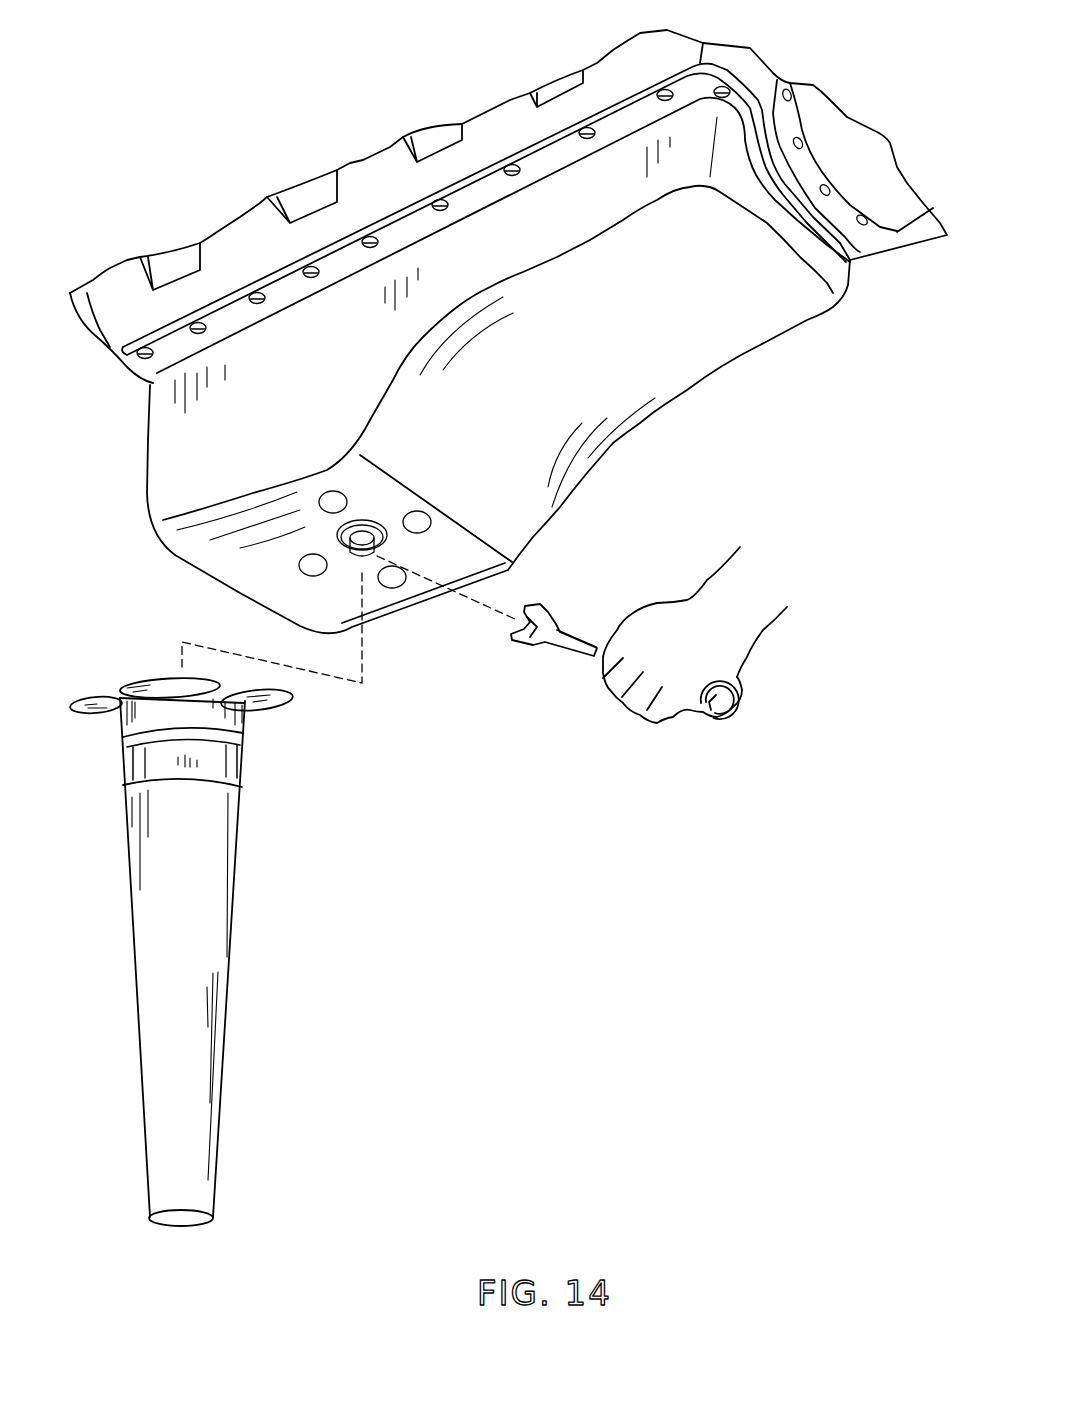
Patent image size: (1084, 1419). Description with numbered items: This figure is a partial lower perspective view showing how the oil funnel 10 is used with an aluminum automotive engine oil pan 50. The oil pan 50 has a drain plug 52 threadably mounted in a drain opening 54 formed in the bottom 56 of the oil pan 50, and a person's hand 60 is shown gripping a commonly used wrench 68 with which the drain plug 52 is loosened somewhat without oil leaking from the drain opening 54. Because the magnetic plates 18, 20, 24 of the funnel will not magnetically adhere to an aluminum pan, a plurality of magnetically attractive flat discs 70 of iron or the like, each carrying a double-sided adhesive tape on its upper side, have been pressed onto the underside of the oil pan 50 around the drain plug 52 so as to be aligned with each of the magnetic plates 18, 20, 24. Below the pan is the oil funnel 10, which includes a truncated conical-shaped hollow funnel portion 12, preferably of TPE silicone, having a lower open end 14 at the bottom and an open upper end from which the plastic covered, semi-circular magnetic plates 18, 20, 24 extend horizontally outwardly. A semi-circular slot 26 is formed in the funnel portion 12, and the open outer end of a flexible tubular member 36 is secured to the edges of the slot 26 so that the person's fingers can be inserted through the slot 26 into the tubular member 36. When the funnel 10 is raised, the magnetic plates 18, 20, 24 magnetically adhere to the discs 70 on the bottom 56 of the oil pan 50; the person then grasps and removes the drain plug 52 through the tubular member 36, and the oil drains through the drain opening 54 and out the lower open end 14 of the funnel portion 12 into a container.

The oil funnel 10 is at (230, 943).
The funnel portion 12 is at (130, 1022).
The lower open end 14 is at (192, 1213).
The magnetic plate 18 is at (150, 690).
The magnetic plate 20 is at (85, 715).
The magnetic plate 24 is at (282, 703).
The slot 26 is at (215, 793).
The flexible tubular member 36 is at (215, 760).
The oil pan 50 is at (508, 356).
The drain plug 52 is at (377, 552).
The drain opening 54 is at (383, 521).
The bottom 56 is at (270, 586).
The person's hand 60 is at (712, 656).
The wrench 68 is at (580, 647).
The magnetically attractive flat disc 70 is at (440, 519).